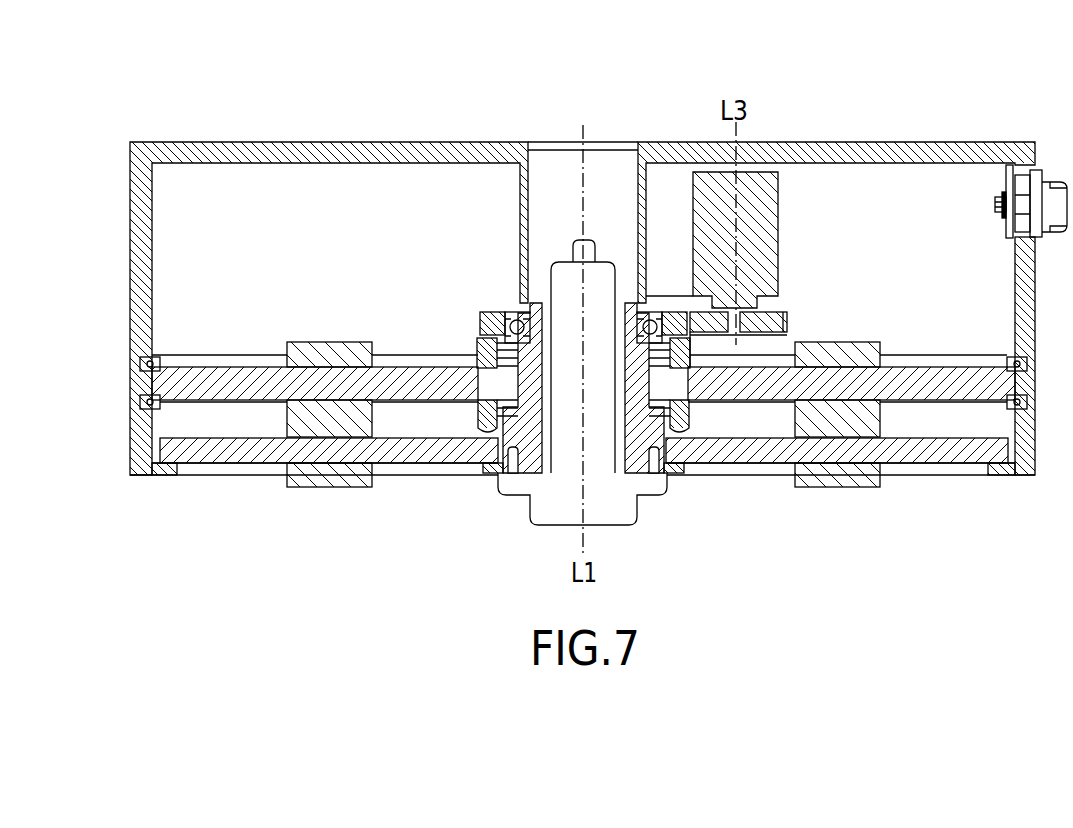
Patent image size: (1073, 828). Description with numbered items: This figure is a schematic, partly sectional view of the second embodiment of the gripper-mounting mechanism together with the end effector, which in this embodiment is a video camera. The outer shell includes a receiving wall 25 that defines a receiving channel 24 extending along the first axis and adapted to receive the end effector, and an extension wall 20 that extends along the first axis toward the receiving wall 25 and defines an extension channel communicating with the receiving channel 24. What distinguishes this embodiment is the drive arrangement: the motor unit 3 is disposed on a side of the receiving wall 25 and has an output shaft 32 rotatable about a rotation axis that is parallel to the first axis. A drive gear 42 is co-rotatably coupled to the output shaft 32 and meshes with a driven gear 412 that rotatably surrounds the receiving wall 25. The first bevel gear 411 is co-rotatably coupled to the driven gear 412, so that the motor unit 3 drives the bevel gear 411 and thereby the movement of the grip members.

The extension wall 20 is at (523, 203).
The motor unit 3 is at (783, 192).
The driven gear 412 is at (662, 210).
The first bevel gear 411 is at (490, 337).
The drive gear 42 is at (787, 313).
The output shaft 32 is at (742, 337).
The receiving channel 24 is at (548, 452).
The receiving wall 25 is at (639, 443).